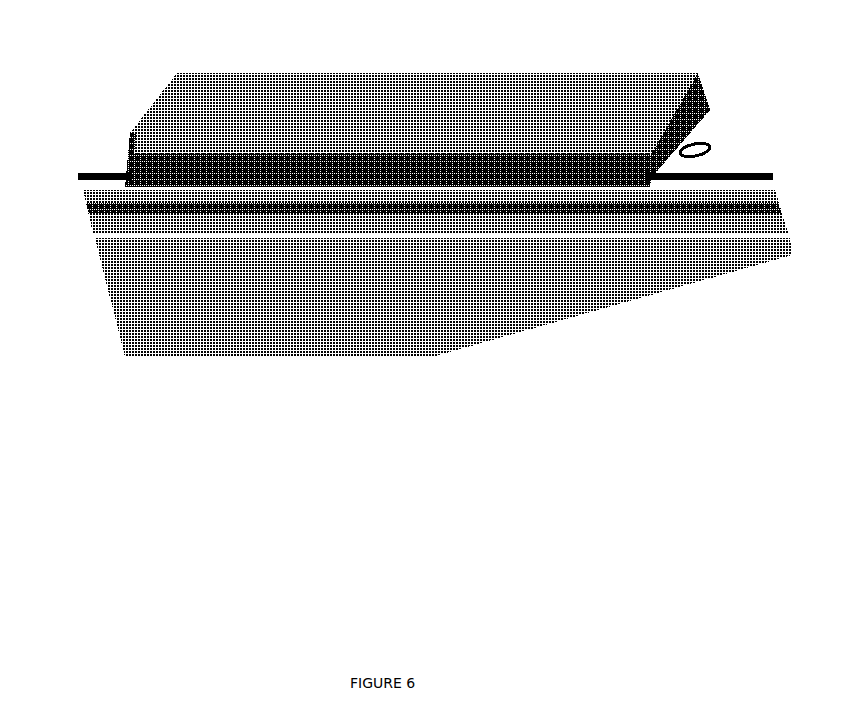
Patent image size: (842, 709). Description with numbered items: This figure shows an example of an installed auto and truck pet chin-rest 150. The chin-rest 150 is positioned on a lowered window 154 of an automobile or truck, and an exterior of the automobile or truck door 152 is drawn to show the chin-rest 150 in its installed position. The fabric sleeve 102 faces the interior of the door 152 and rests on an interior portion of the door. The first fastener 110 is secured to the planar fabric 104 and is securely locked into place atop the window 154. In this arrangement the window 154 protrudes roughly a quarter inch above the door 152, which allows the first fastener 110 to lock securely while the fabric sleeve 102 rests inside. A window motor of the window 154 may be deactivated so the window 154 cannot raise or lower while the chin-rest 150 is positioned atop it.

The chin-rest 150 is at (460, 48).
The fabric sleeve 102 is at (550, 80).
The planar fabric 104 is at (130, 172).
The first fastener 110 is at (125, 175).
The window 154 is at (85, 185).
The automobile or truck door 152 is at (116, 310).